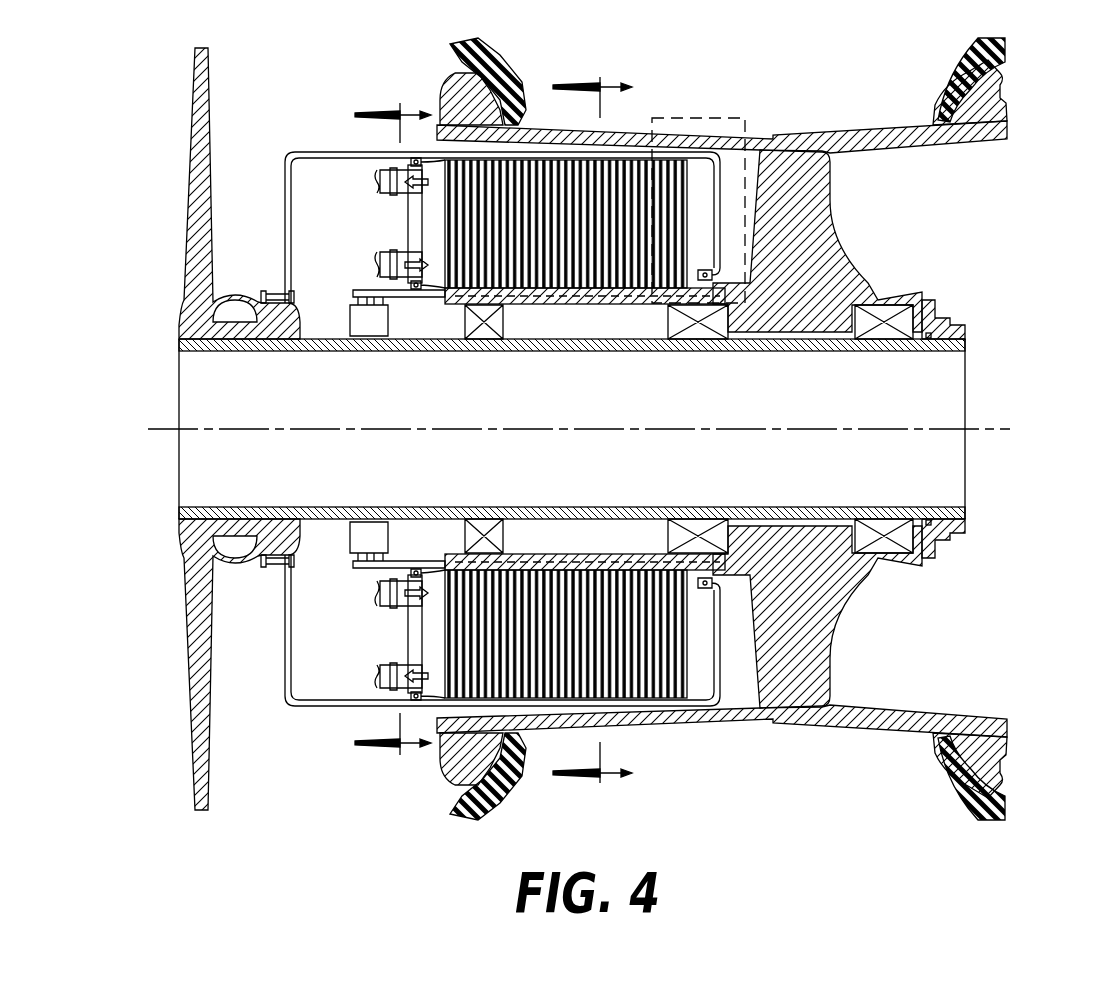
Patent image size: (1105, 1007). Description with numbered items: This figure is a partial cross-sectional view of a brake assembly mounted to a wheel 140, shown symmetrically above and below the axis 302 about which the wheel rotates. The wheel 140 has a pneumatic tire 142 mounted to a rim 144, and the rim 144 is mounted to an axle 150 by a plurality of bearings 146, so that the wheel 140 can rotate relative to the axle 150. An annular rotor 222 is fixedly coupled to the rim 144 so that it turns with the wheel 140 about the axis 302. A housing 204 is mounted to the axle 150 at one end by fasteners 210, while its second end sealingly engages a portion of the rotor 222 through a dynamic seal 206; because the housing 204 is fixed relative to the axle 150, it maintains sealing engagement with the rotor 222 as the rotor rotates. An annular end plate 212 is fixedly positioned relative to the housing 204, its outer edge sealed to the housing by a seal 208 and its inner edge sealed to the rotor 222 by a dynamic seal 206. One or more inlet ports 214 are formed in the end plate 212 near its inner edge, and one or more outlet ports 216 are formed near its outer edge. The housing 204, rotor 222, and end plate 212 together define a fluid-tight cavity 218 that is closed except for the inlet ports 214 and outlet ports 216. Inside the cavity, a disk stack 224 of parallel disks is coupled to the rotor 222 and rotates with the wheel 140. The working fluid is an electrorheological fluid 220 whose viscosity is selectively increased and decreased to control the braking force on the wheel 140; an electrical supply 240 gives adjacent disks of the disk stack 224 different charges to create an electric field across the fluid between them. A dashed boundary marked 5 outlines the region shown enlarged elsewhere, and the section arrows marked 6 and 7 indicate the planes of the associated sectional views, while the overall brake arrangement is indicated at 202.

The wheel 140 is at (1034, 87).
The pneumatic tire 142 is at (1005, 47).
The rim 144 is at (847, 243).
The bearings 146 is at (500, 338).
The axle 150 is at (192, 527).
The cooling assembly 202 is at (312, 100).
The housing 204 is at (285, 156).
The dynamic seal 206 is at (438, 288).
The seal 208 is at (433, 152).
The fasteners 210 is at (261, 296).
The annular end plate 212 is at (408, 218).
The inlet ports 214 is at (407, 262).
The outlet ports 216 is at (410, 165).
The fluid-tight cavity 218 is at (718, 618).
The electrorheological fluid 220 is at (703, 630).
The annular rotor 222 is at (708, 300).
The disk stack 224 is at (700, 197).
The electrical supply 240 is at (352, 320).
The axis 302 is at (1007, 432).
The detail view boundary FIG. 5 is at (745, 118).
The section line 6- 6 is at (592, 427).
The section line 7- 7 is at (393, 431).